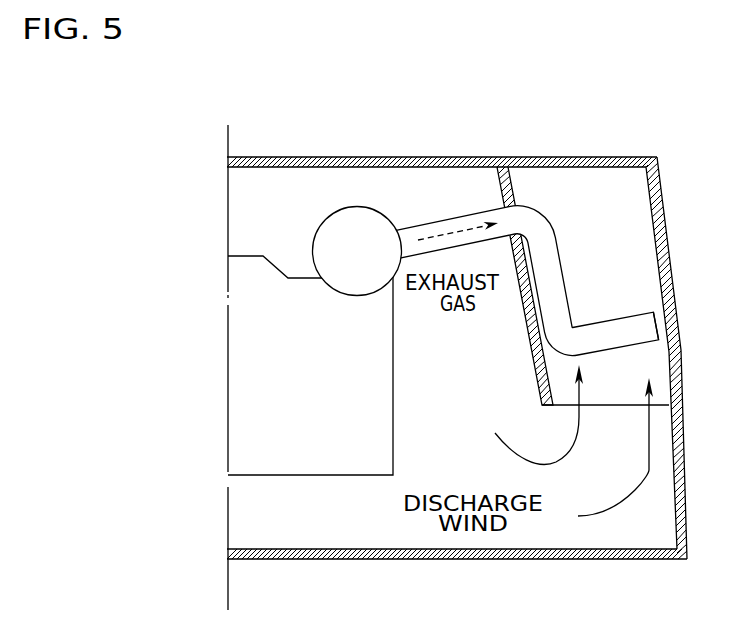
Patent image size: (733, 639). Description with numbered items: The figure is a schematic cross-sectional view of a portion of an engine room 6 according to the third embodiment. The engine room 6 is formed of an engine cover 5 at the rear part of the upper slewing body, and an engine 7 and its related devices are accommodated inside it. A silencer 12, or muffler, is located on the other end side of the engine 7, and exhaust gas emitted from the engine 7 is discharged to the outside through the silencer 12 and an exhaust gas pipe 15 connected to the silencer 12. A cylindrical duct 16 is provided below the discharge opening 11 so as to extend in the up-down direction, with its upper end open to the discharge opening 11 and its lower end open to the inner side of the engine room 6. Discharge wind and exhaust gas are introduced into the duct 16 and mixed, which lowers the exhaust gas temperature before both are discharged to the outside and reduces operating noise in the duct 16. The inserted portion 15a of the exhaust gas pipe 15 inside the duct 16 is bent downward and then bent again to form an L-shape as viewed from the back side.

The engine cover 5 is at (358, 156).
The engine room 6 is at (366, 534).
The engine 7 is at (249, 256).
The discharge opening 11 is at (568, 156).
The silencer 12 is at (341, 206).
The exhaust gas pipe 15 is at (446, 219).
The inserted portion 15a is at (564, 282).
The duct 16 is at (528, 333).